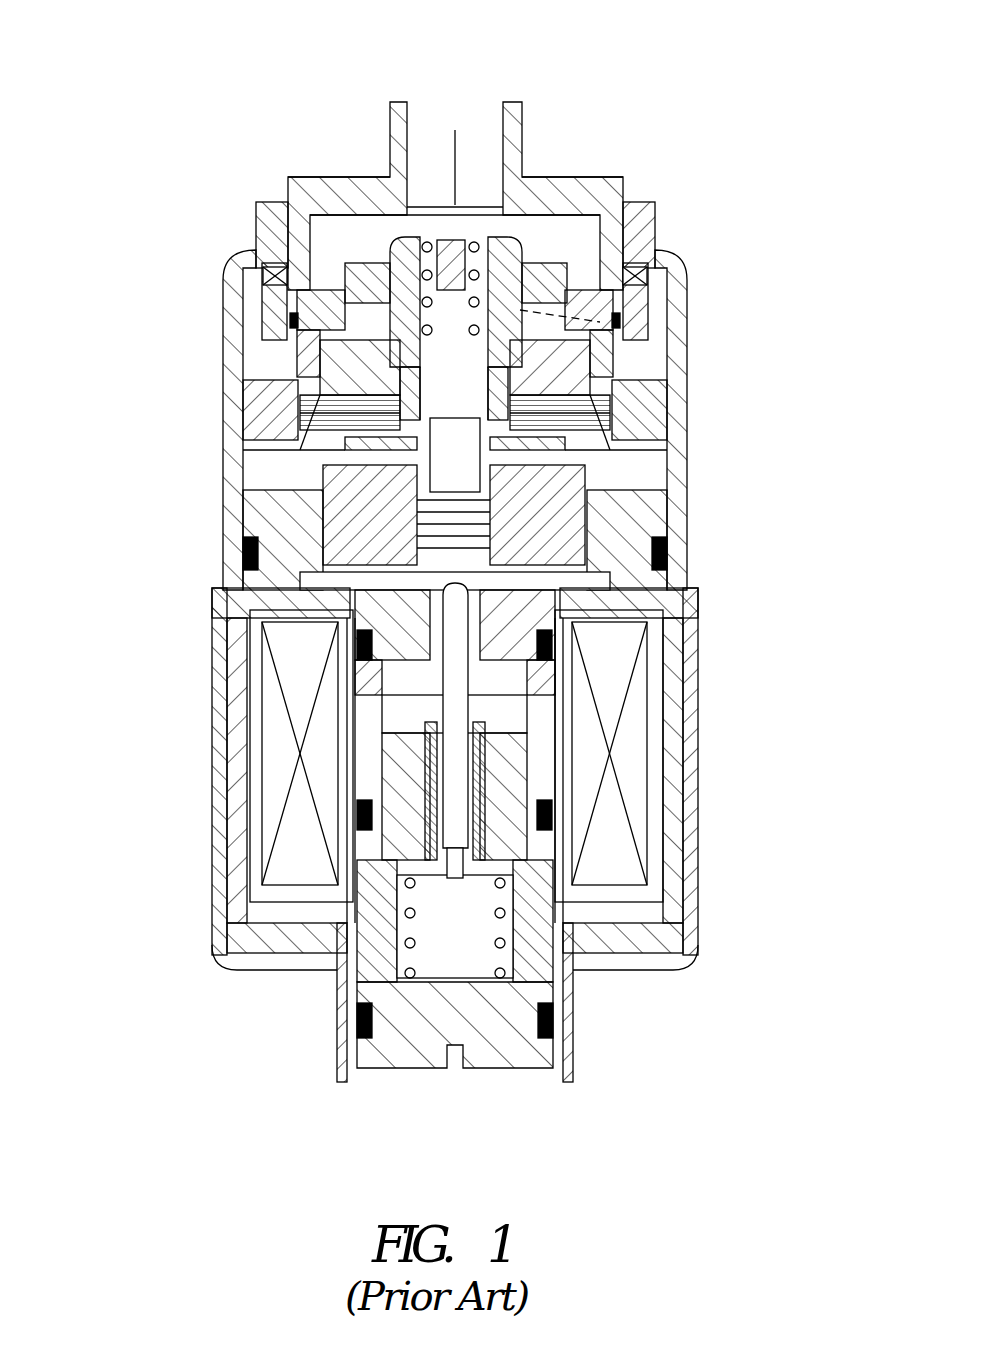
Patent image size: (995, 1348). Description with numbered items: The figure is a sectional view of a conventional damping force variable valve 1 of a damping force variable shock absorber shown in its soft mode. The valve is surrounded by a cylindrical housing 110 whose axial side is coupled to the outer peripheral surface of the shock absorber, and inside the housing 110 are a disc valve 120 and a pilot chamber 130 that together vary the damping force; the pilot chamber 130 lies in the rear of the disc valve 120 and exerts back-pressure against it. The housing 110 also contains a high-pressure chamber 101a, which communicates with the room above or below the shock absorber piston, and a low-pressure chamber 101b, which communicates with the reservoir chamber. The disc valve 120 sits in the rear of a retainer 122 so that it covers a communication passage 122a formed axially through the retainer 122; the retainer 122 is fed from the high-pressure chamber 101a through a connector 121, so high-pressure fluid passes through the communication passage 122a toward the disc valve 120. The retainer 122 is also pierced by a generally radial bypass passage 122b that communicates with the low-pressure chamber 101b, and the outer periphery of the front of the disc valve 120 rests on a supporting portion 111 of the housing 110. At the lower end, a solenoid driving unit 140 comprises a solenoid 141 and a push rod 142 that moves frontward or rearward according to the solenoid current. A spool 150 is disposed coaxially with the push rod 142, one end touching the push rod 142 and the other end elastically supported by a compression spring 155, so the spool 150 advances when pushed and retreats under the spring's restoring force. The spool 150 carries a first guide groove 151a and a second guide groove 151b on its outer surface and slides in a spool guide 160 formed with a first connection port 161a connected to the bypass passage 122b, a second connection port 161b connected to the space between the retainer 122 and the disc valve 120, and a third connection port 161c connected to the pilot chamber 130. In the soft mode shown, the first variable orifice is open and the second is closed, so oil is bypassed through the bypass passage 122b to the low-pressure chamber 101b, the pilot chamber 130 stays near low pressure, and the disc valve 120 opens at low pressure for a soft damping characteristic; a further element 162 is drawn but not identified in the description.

The damping force variable valve 1 is at (461, 544).
The high-pressure chamber 101a is at (412, 140).
The low-pressure chamber 101b is at (628, 203).
The housing 110 is at (237, 535).
The supporting portion 111 is at (290, 400).
The disc valve 120 is at (310, 462).
The connector 121 is at (612, 228).
The retainer 122 is at (300, 362).
The communication passage 122a is at (320, 345).
The bypass passage 122b is at (600, 322).
The pilot chamber 130 is at (270, 488).
The solenoid driving unit 140 is at (612, 912).
The solenoid 141 is at (655, 778).
The push rod 142 is at (553, 595).
The spool 150 is at (460, 455).
The first guide groove 151a is at (468, 240).
The second guide groove 151b is at (478, 240).
The compression spring 155 is at (545, 295).
The spool guide 160 is at (620, 420).
The first connection port 161a is at (520, 335).
The second connection port 161b is at (640, 405).
The third connection port 161c is at (600, 462).
The valve member 162 is at (412, 235).